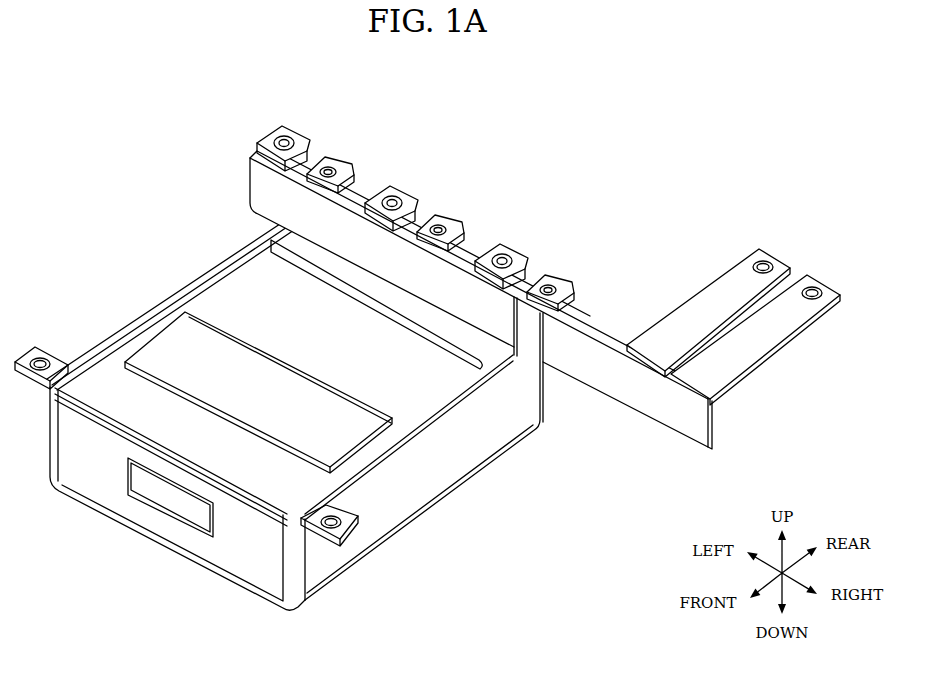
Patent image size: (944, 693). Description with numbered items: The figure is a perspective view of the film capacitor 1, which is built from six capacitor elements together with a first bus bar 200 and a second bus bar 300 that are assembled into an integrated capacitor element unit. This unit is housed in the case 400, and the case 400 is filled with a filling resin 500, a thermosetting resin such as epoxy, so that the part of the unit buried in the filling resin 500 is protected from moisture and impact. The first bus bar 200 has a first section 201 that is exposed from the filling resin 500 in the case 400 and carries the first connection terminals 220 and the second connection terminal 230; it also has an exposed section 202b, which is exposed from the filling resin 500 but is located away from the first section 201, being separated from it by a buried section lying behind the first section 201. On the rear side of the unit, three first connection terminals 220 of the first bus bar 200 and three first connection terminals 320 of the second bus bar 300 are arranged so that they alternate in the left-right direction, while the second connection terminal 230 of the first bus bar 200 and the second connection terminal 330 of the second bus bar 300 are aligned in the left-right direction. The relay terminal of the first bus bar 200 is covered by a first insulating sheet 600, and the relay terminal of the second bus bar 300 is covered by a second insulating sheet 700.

The film capacitor 1 is at (427, 342).
The first bus bar 200 is at (143, 337).
The first section 201 is at (235, 280).
The exposed section 202b is at (172, 323).
The first connection terminal 220 is at (288, 128).
The second connection terminal 230 is at (783, 343).
The second bus bar 300 is at (580, 302).
The first connection terminal 320 is at (340, 158).
The second connection terminal 330 is at (735, 282).
The case 400 is at (450, 470).
The filling resin 500 is at (217, 247).
The first insulating sheet 600 is at (608, 377).
The second insulating sheet 700 is at (358, 197).